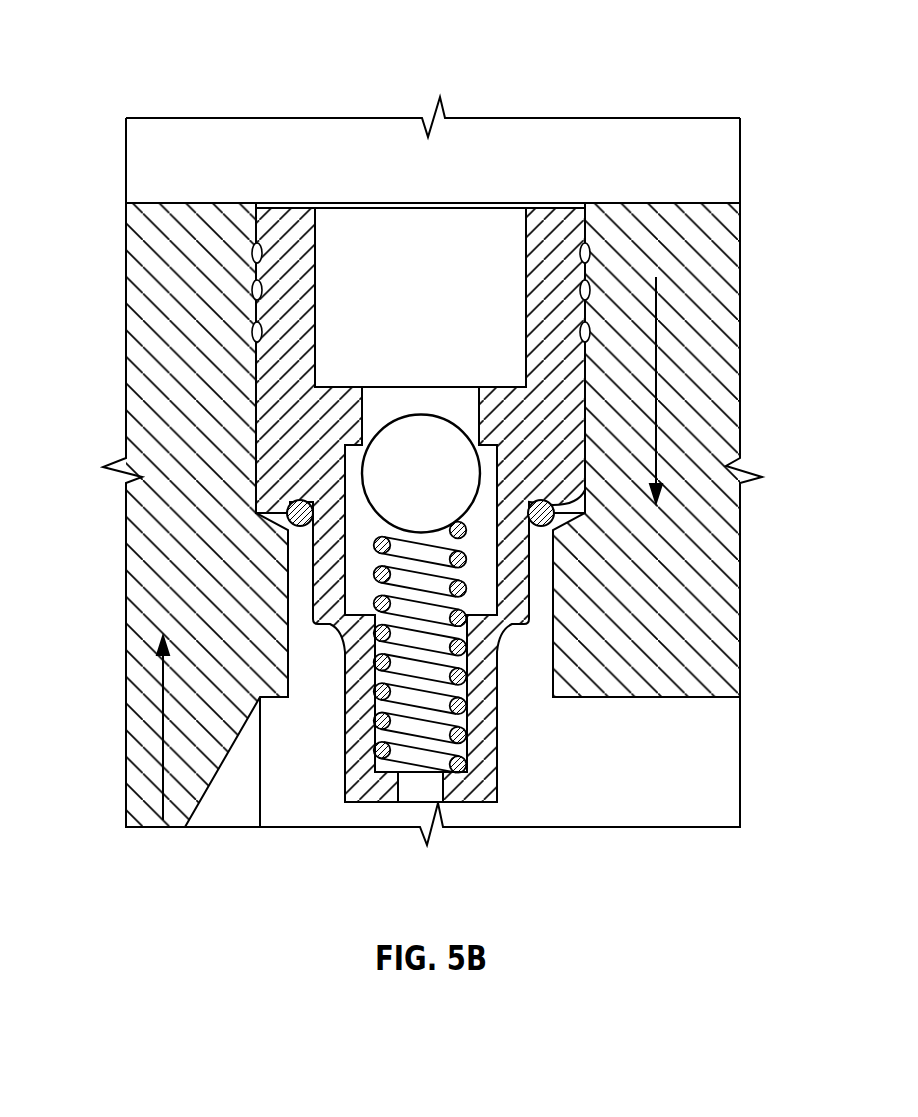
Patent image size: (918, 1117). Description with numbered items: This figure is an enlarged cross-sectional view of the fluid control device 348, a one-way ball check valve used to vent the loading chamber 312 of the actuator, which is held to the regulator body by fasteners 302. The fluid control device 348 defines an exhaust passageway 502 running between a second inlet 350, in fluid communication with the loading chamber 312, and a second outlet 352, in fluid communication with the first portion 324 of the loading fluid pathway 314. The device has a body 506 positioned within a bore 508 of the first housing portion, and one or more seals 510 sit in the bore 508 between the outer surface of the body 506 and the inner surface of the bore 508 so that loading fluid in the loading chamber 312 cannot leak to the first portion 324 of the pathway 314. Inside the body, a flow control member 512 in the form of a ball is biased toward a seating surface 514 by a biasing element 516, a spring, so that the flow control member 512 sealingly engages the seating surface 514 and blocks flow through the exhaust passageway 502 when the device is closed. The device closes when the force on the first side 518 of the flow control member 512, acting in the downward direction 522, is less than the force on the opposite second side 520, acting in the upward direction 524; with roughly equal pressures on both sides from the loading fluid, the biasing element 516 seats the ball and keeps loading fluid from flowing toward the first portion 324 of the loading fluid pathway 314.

The fluid control device 348 is at (141, 51).
The loading chamber 312 is at (708, 170).
The fasteners 302 is at (705, 620).
The bore 508 is at (257, 402).
The second inlet 350 is at (337, 206).
The exhaust passageway 502 is at (452, 246).
The seating surface 514 is at (358, 400).
The seals 510 is at (253, 253).
The body 506 is at (580, 228).
The first side 518 is at (405, 420).
The flow control member 512 is at (287, 517).
The second side 520 is at (422, 535).
The biasing element 516 is at (343, 616).
The second outlet 352 is at (420, 788).
The downward direction 522 is at (658, 363).
The upward direction 524 is at (158, 712).
The first portion 324 is at (700, 761).
The loading fluid pathway 314 is at (676, 800).